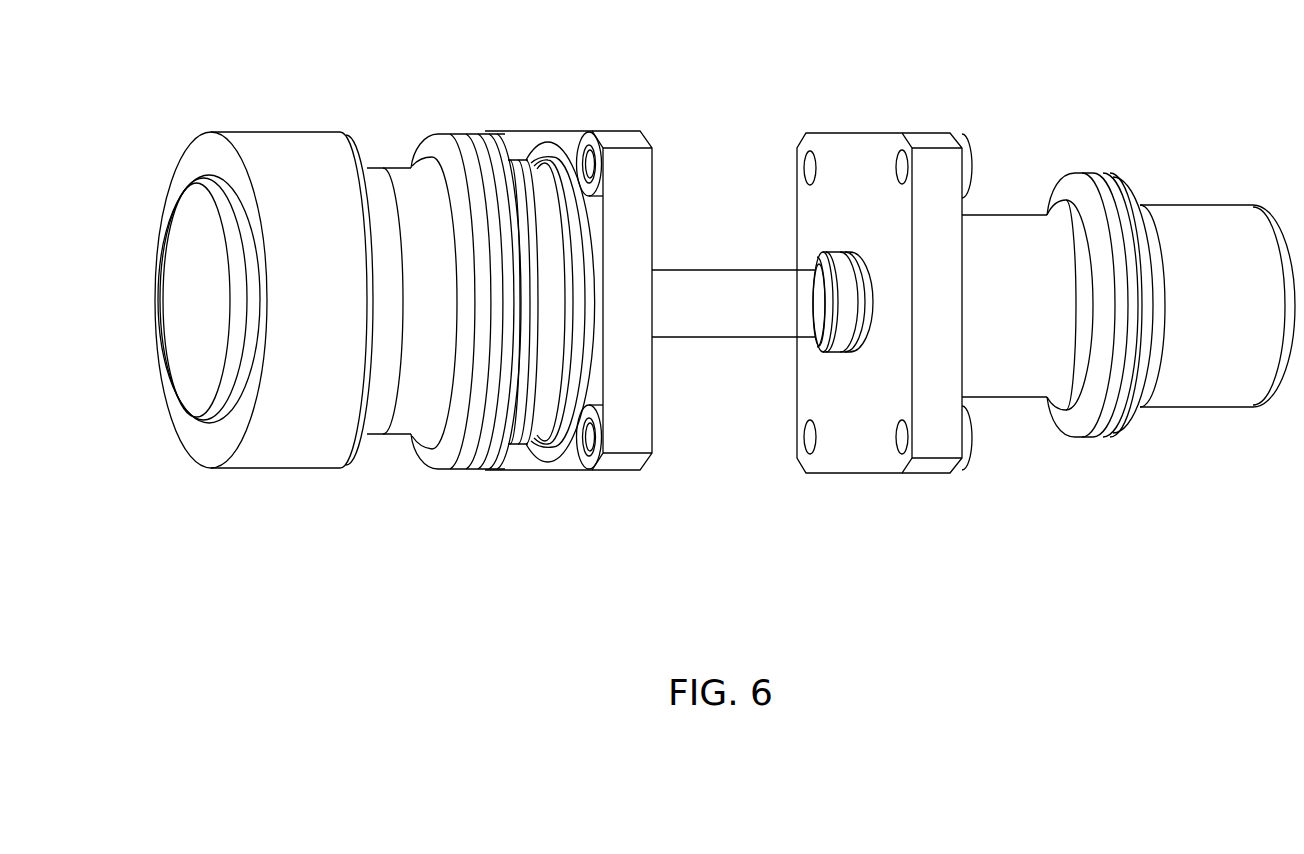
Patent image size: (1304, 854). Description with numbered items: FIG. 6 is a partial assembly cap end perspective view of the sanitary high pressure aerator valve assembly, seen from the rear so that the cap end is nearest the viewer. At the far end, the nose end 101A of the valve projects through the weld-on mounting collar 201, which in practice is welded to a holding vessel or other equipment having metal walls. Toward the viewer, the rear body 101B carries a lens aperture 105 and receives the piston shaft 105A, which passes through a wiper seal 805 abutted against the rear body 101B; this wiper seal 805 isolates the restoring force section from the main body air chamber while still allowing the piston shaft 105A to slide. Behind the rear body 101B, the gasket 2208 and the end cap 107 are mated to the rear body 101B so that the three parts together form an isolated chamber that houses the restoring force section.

The weld-on mounting collar 201 is at (283, 272).
The lens aperture 105 is at (186, 318).
The nose end 101A is at (552, 342).
The piston shaft 105A is at (734, 272).
The wiper seal 805 is at (802, 355).
The rear body 101B is at (912, 342).
The gasket 2208 is at (1069, 275).
The end cap 107 is at (1217, 275).